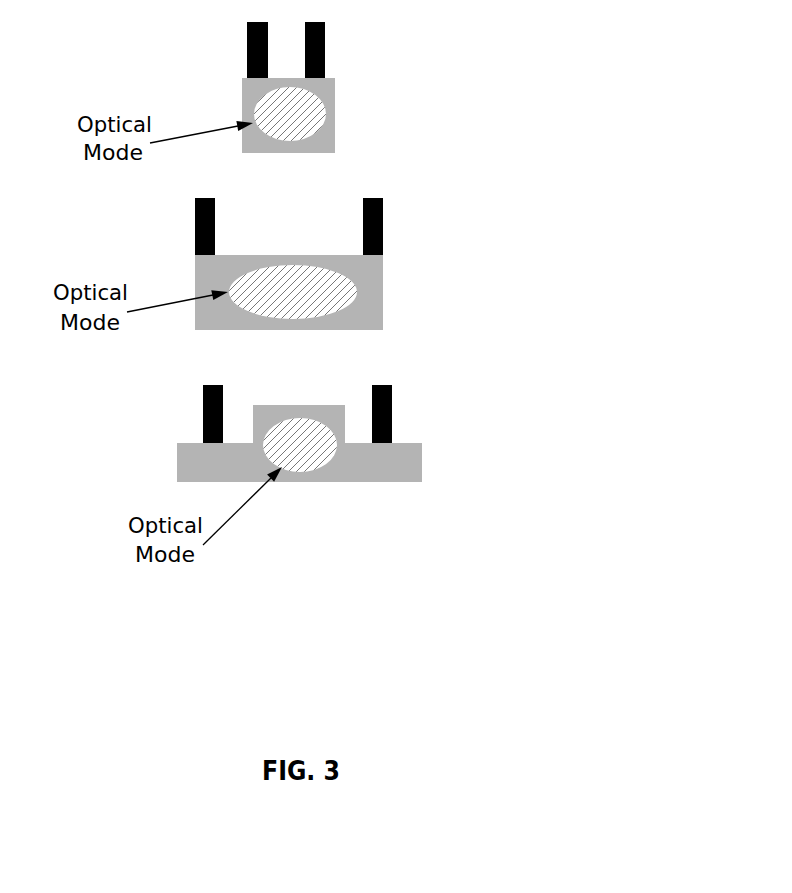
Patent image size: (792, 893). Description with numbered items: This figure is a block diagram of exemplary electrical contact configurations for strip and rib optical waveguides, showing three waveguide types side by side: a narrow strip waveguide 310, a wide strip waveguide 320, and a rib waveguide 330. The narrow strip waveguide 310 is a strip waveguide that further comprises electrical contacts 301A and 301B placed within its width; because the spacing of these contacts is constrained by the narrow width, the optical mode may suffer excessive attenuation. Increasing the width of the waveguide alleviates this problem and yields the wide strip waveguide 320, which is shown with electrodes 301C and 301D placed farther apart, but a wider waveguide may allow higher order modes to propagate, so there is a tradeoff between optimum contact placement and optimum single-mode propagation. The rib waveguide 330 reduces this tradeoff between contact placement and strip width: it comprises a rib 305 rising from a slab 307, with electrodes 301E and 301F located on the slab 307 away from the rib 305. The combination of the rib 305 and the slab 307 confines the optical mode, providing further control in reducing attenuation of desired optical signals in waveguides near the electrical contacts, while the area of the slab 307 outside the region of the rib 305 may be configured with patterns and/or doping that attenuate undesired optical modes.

The electrical contact 301A is at (247, 38).
The electrical contact 301B is at (325, 38).
The electrode 301C is at (195, 227).
The electrode 301D is at (383, 218).
The electrode 301E is at (203, 411).
The electrode 301F is at (392, 400).
The rib 305 is at (273, 405).
The slab 307 is at (177, 460).
The narrow strip waveguide 310 is at (459, 87).
The wide strip waveguide 320 is at (425, 264).
The rib waveguide 330 is at (403, 416).